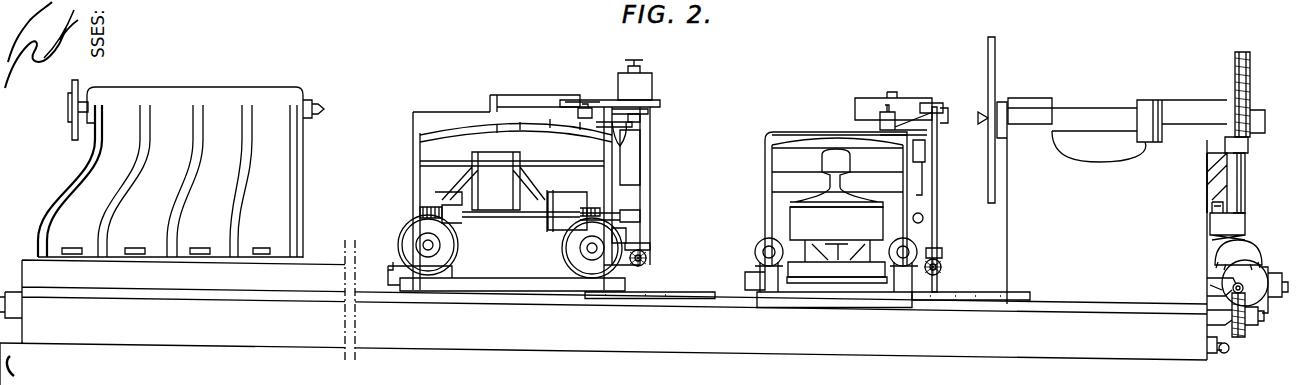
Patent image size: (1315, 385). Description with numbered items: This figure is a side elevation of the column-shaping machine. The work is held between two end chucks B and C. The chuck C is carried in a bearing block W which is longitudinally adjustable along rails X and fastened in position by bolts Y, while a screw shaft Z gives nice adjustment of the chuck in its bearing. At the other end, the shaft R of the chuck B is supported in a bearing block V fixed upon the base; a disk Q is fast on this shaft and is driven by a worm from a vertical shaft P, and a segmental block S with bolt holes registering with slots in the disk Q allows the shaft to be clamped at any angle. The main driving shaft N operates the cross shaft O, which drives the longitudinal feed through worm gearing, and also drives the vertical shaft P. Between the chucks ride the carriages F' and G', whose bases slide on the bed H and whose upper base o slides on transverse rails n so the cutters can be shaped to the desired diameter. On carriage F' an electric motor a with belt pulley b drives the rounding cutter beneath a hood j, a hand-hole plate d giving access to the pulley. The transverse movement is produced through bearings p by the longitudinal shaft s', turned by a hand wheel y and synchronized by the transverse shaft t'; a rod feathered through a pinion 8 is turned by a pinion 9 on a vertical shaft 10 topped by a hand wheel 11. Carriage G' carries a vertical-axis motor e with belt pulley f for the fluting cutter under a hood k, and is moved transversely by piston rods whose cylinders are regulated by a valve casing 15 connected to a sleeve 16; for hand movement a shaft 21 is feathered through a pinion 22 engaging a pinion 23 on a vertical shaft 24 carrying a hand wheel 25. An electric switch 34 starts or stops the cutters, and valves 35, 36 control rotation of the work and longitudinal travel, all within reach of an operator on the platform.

The screw shaft Z is at (70, 108).
The bearing block W is at (170, 172).
The end chuck C is at (318, 111).
The bolts Y is at (278, 220).
The rails X is at (304, 272).
The carriage F' is at (519, 181).
The electric motor a is at (493, 181).
The belt pulley b is at (562, 205).
The longitudinal shaft s' is at (507, 218).
The hand wheel y is at (548, 232).
The upper base o is at (393, 262).
The rails n is at (412, 292).
The bearings p is at (442, 292).
The hand-hole plate d is at (575, 100).
The electric switch 34 is at (575, 100).
The hood j is at (645, 88).
The hand wheel 11 is at (712, 80).
The valve 35 is at (640, 118).
The valve 36 is at (622, 135).
The vertical shaft 10 is at (640, 172).
The transverse shaft t' is at (624, 217).
The pinion 9 is at (652, 245).
The pinion 8 is at (648, 256).
The carriage G' is at (826, 192).
The belt pulley f is at (846, 160).
The motor e is at (836, 242).
The bed H is at (862, 327).
The hood k is at (866, 104).
The vertical shaft 24 is at (936, 156).
The hand wheel 25 is at (940, 102).
The end chuck B is at (938, 134).
The valve casing 15 is at (926, 190).
The sleeve 16 is at (923, 218).
The pinion 23 is at (943, 254).
The shaft 21 is at (942, 266).
The pinion 22 is at (940, 276).
The bearing block V is at (1031, 170).
The chuck shaft R is at (1102, 103).
The disk Q is at (1250, 78).
The segmental block S is at (1210, 180).
The vertical shaft P is at (1240, 213).
The cross shaft O is at (1236, 286).
The main driving shaft N is at (1250, 328).